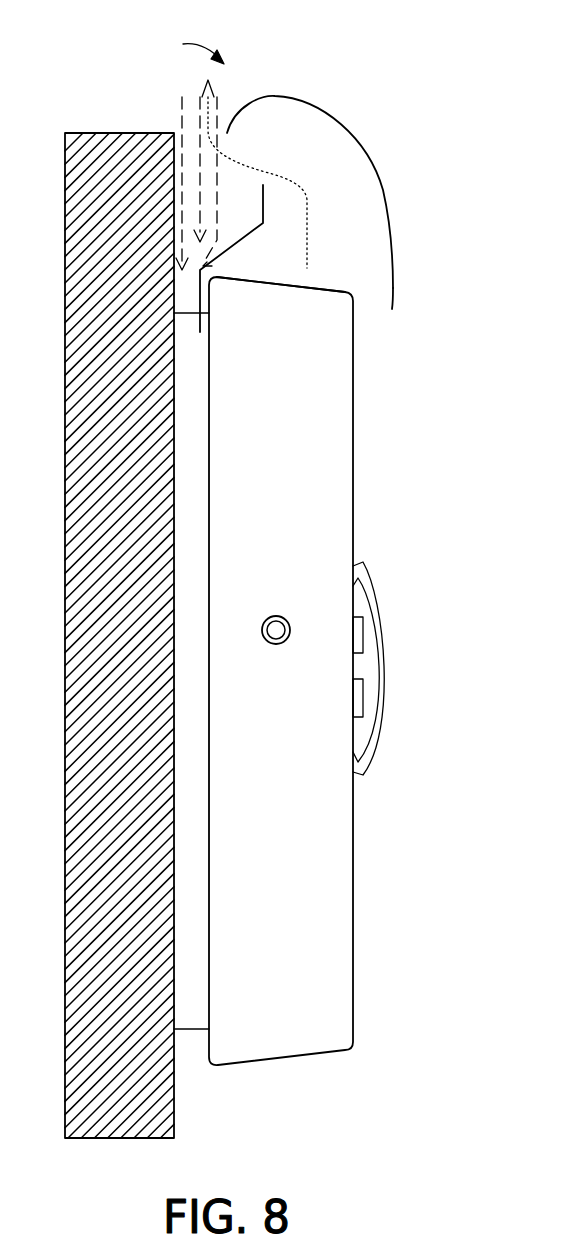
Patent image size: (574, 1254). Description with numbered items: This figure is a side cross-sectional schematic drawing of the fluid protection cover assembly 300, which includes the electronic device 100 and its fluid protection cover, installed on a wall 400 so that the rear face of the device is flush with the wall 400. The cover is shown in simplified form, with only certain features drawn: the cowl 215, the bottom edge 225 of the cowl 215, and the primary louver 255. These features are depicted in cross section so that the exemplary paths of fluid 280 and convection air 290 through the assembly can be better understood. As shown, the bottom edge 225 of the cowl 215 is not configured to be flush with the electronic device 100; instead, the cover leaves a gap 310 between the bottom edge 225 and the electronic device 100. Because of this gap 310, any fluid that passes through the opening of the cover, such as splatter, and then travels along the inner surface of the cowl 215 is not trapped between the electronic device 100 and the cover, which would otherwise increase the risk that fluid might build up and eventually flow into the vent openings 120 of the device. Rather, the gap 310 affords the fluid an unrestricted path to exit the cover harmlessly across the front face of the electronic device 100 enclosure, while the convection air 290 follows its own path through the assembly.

The electronic device 100 is at (333, 453).
The vent openings 120 is at (310, 290).
The cowl 215 is at (349, 137).
The bottom edge 225 is at (392, 306).
The primary louver 255 is at (246, 223).
The fluid 280 is at (182, 114).
The convection air 290 is at (267, 172).
The fluid protection cover assembly 300 is at (181, 49).
The gap 310 is at (364, 295).
The wall 400 is at (82, 655).